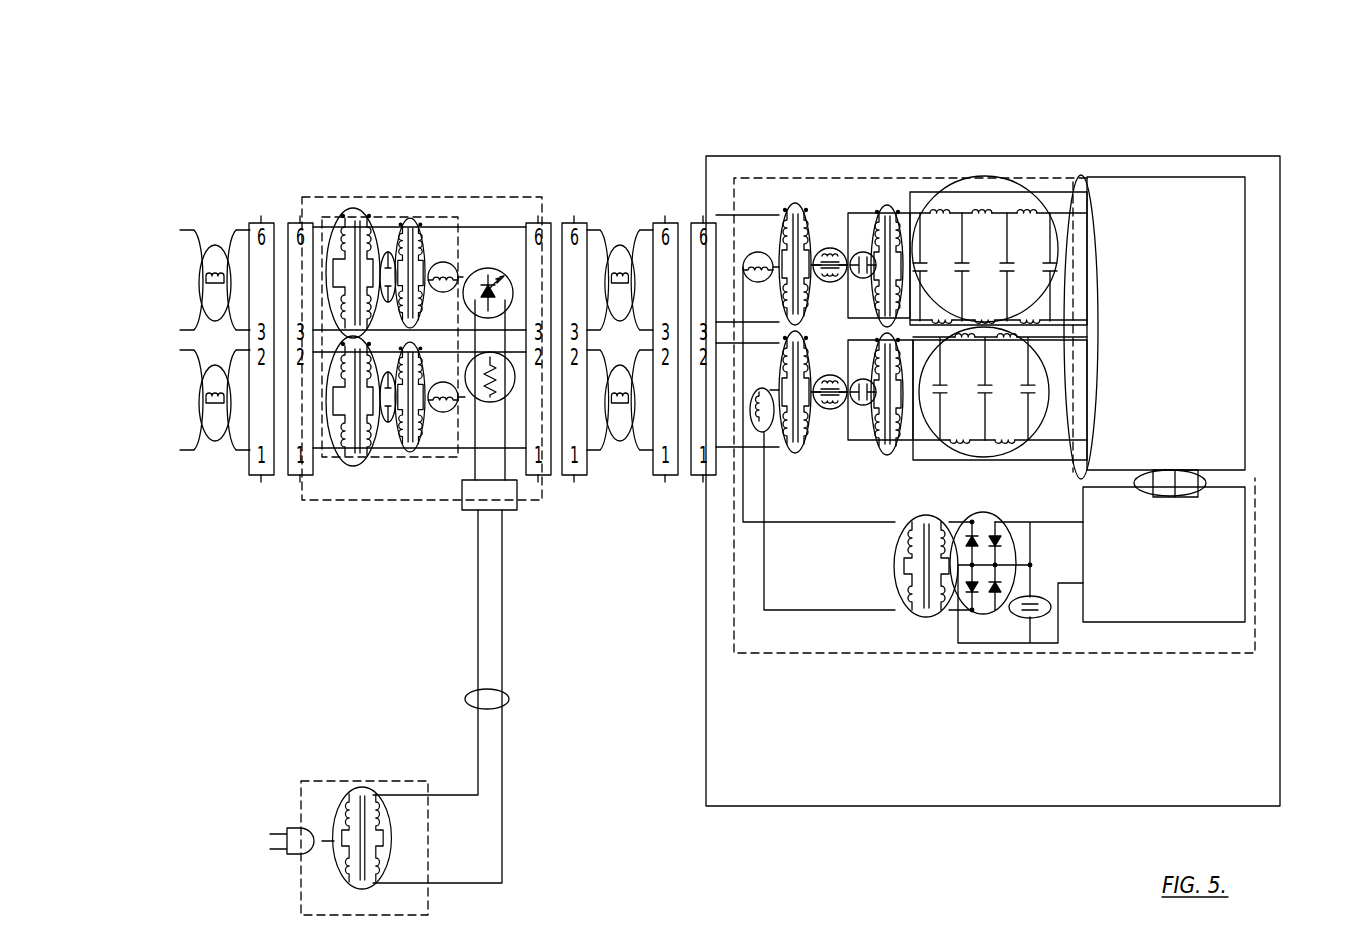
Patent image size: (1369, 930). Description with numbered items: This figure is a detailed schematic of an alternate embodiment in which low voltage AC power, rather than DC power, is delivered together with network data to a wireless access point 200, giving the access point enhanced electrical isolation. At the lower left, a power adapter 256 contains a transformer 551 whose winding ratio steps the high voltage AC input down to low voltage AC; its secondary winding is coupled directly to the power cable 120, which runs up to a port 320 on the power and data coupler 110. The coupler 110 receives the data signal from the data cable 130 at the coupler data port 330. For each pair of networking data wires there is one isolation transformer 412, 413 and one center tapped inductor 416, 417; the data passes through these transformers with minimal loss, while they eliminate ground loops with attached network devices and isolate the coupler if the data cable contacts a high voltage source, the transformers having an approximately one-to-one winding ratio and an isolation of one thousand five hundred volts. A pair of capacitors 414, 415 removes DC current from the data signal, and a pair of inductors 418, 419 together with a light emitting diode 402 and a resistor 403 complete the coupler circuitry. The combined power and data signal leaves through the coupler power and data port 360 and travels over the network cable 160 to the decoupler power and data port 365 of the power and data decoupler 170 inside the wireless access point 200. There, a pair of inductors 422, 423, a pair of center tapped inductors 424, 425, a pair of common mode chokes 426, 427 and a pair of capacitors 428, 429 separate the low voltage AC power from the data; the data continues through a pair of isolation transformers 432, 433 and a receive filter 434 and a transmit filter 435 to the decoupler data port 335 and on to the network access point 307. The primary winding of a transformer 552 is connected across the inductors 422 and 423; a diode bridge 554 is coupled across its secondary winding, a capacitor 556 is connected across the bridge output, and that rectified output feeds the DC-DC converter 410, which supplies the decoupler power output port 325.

The data cable 130 is at (220, 250).
The coupler data port 330 is at (293, 218).
The coupler power and data port 360 is at (547, 210).
The decoupler power and data port 365 is at (697, 208).
The network cable 160 is at (623, 434).
The power and data coupler 110 is at (392, 368).
The isolation transformer 412 is at (338, 210).
The isolation transformer 413 is at (350, 470).
The capacitor 414 is at (386, 245).
The capacitor 415 is at (405, 461).
The center tapped inductor 416 is at (396, 222).
The center tapped inductor 417 is at (441, 446).
The inductor 418 is at (454, 249).
The inductor 419 is at (447, 420).
The light emitting diode 402 is at (488, 266).
The resistor 403 is at (513, 358).
The coupler power input port 320 is at (519, 514).
The power cable 120 is at (512, 693).
The power adapter 256 is at (350, 815).
The transformer 551 is at (395, 837).
The wireless access point 200 is at (1228, 153).
The power and data decoupler 170 is at (1042, 175).
The inductor 422 is at (757, 250).
The inductor 423 is at (760, 434).
The transformer 424 is at (787, 203).
The center tapped inductor 425 is at (794, 455).
The common mode choke 426 is at (827, 246).
The common mode choke 427 is at (830, 412).
The capacitor 428 is at (860, 250).
The capacitor 429 is at (862, 408).
The isolation transformer 432 is at (878, 204).
The isolation transformer 433 is at (966, 313).
The receive filter 434 is at (942, 186).
The transmit filter 435 is at (1056, 392).
The decoupler data port 335 is at (1090, 173).
The network access point 307 is at (1185, 362).
The decoupler power output port 325 is at (1202, 481).
The DC-DC converter 410 is at (1182, 594).
The transformer 552 is at (924, 620).
The diode bridge 554 is at (979, 618).
The capacitor 556 is at (1034, 622).